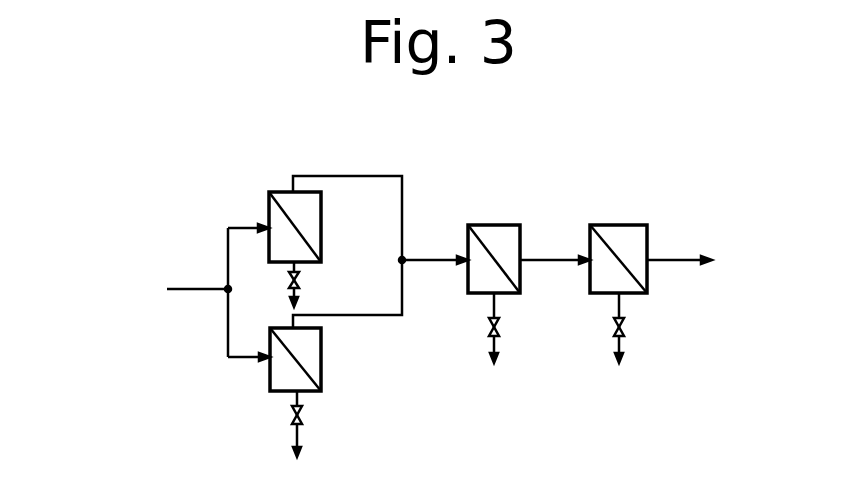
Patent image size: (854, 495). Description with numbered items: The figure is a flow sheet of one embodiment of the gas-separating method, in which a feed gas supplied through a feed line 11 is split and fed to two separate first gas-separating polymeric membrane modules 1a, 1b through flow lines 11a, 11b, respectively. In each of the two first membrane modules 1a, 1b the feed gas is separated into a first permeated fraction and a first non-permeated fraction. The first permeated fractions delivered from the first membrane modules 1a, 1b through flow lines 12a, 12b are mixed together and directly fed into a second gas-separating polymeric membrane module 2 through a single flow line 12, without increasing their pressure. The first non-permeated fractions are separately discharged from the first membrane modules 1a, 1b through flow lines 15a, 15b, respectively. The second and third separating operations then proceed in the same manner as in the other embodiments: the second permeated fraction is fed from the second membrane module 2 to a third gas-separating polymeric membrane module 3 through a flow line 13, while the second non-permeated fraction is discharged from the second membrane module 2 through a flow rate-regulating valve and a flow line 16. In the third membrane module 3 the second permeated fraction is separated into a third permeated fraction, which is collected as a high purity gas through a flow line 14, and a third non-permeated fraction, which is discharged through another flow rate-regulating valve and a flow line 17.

The first gas-separating polymeric membrane module 1a is at (321, 215).
The first gas-separating polymeric membrane module 1b is at (321, 365).
The second gas-separating polymeric membrane module 2 is at (494, 225).
The third gas-separating polymeric membrane module 3 is at (618, 225).
The feed line 11 is at (178, 288).
The flow line 11a is at (228, 238).
The flow line 11b is at (228, 343).
The flow line 12 is at (437, 259).
The flow line 12a is at (342, 176).
The flow line 12b is at (386, 317).
The flow line 13 is at (554, 259).
The flow line 14 is at (678, 259).
The flow line 15a is at (296, 292).
The flow line 15b is at (298, 436).
The flow line 16 is at (497, 351).
The flow line 17 is at (622, 351).